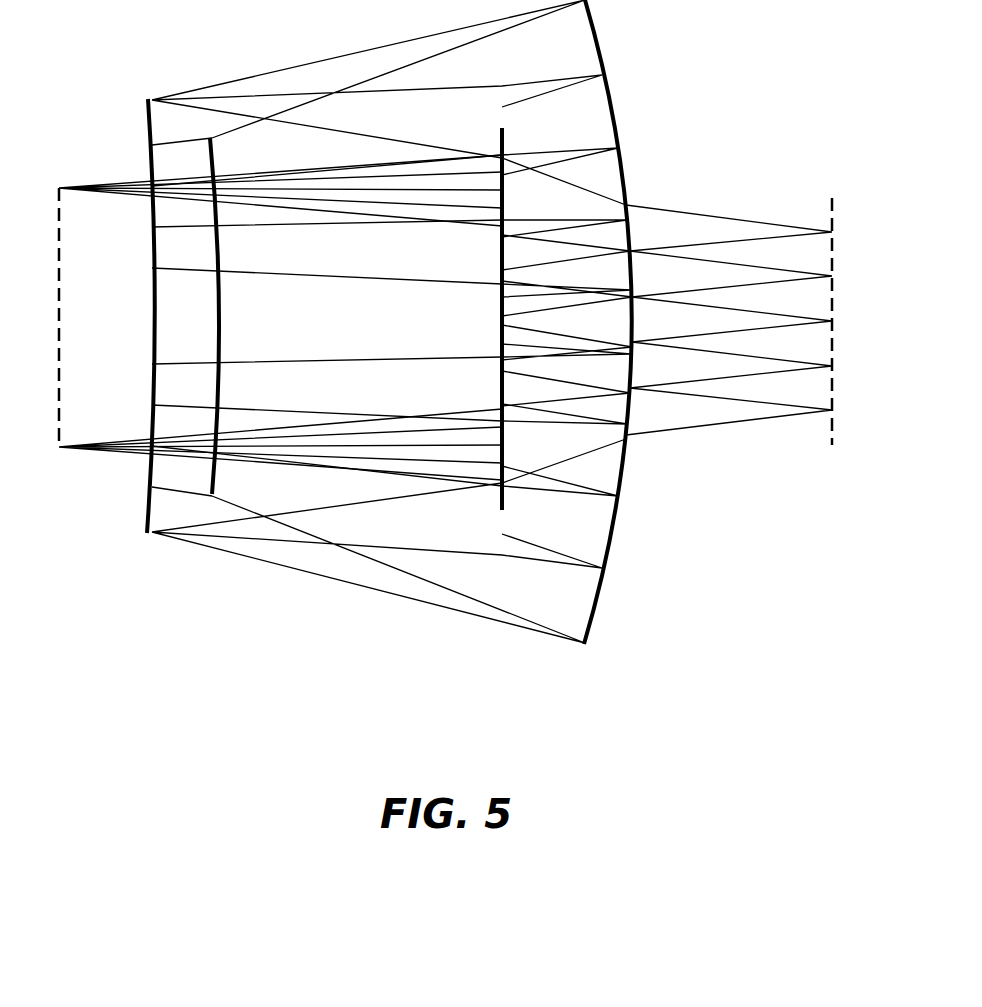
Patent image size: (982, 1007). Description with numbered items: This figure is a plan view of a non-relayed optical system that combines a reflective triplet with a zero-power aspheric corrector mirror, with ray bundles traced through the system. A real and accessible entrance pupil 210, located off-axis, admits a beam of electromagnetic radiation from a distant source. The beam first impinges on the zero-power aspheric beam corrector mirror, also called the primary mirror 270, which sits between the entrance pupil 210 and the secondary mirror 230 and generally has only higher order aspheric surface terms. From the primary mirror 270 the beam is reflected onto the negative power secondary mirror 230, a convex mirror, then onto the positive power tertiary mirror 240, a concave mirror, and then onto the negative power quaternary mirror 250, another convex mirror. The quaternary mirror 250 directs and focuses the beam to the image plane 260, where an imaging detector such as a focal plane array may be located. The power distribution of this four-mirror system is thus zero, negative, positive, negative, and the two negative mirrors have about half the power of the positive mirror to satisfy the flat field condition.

The entrance pupil 210 is at (57, 435).
The secondary mirror 230 is at (148, 126).
The tertiary mirror 240 is at (597, 38).
The quaternary mirror 250 is at (218, 326).
The image plane 260 is at (831, 216).
The primary mirror 270 is at (505, 143).